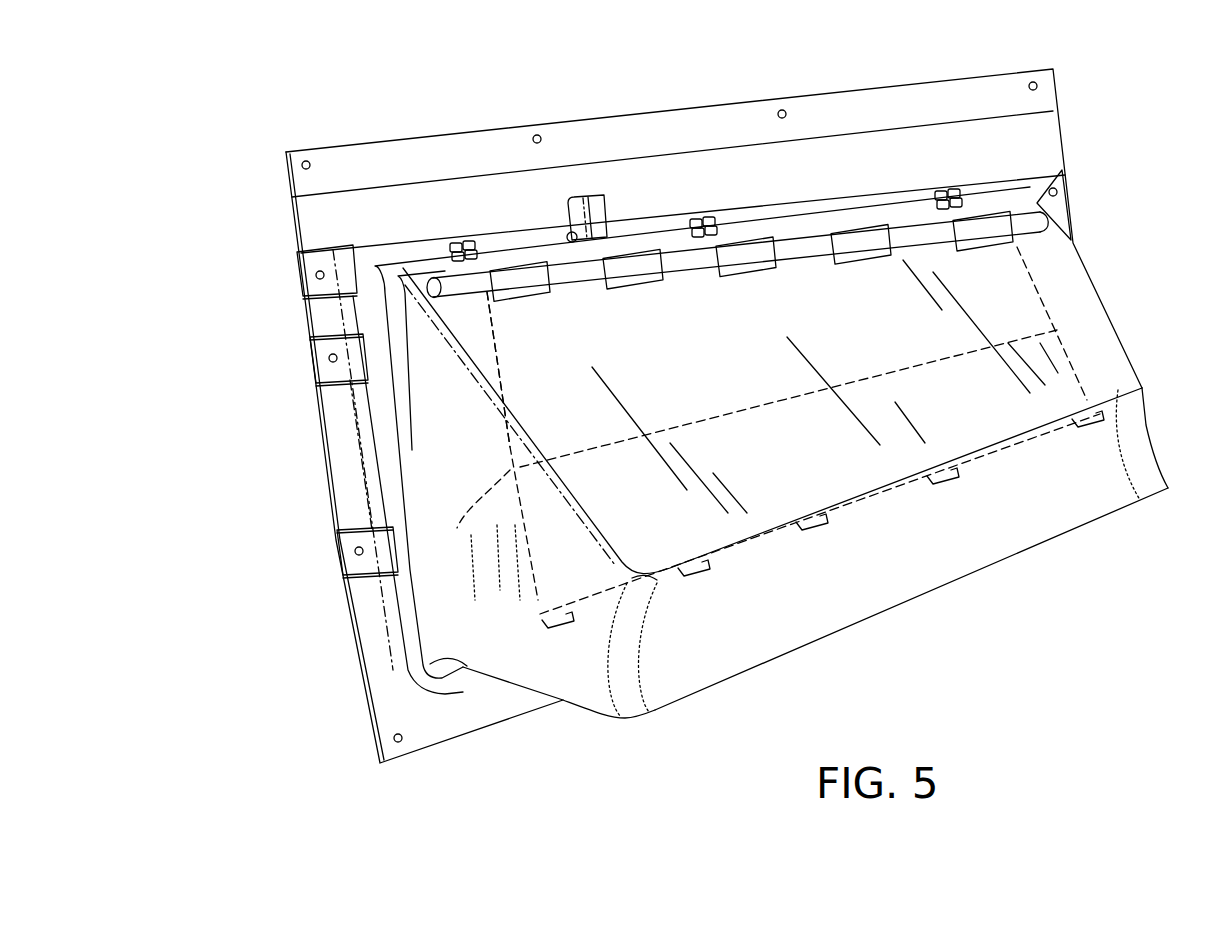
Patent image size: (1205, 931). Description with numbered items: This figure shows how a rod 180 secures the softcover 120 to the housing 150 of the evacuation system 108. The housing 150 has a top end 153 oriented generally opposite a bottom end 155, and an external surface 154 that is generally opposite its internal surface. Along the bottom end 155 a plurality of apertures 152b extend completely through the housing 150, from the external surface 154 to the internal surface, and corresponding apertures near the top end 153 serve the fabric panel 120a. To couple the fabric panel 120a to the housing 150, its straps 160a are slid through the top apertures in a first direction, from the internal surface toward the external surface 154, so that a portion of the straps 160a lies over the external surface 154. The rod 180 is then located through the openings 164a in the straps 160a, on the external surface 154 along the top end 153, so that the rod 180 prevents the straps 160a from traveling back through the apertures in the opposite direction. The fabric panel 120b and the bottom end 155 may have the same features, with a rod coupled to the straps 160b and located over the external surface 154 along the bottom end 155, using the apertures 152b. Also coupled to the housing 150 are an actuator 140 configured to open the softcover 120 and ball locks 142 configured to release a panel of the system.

The evacuation system 108 is at (242, 133).
The softcover 120 is at (766, 430).
The fabric panel 120a is at (507, 388).
The fabric panel 120b is at (592, 592).
The actuator 140 is at (596, 214).
The ball locks 142 is at (938, 203).
The housing 150 is at (415, 432).
The apertures 152b is at (688, 580).
The top end 153 is at (1037, 203).
The external surface 154 is at (878, 355).
The bottom end 155 is at (500, 680).
The straps 160a is at (507, 283).
The straps 160b is at (800, 518).
The openings 164a is at (490, 288).
The rod 180 is at (1032, 226).